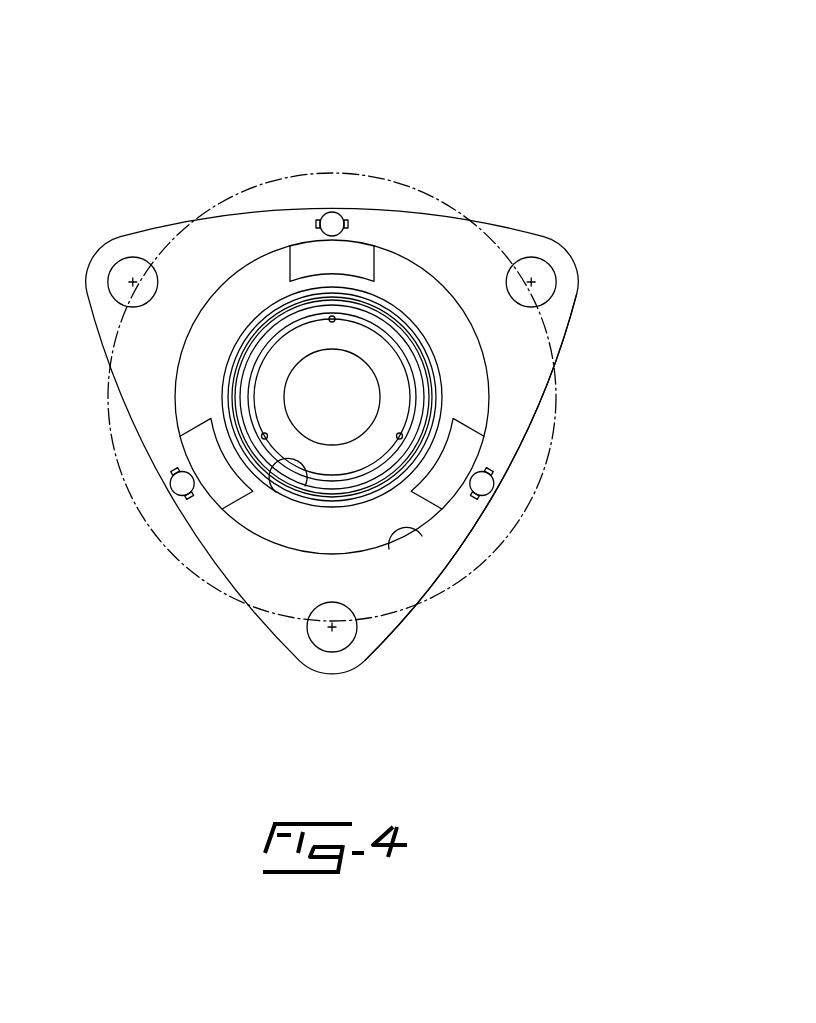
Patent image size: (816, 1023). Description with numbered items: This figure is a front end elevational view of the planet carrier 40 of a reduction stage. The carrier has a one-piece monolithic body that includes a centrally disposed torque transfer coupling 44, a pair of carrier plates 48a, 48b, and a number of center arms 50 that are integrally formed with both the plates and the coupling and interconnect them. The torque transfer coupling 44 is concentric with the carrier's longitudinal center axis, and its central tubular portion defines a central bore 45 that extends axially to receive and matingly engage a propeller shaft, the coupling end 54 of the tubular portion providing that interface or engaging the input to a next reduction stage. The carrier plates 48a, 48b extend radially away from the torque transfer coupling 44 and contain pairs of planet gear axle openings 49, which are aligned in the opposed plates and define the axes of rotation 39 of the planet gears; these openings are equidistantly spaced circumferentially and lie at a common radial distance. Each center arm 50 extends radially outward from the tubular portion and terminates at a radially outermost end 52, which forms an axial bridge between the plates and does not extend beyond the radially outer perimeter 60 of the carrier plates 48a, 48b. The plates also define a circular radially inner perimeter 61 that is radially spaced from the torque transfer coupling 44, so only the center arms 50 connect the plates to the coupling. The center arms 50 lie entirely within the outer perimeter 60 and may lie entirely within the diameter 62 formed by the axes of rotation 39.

The planet carrier 40 is at (460, 134).
The axes of rotation of the planet gears 39 is at (130, 280).
The torque transfer coupling 44 is at (455, 370).
The central bore 45 is at (349, 412).
The carrier plate 48a is at (367, 412).
The carrier plate 48b is at (480, 246).
The planet gear axle openings 49 is at (556, 290).
The center arms 50 is at (315, 255).
The radially outermost ends of the center arms 52 is at (333, 205).
The coupling end 54 is at (305, 490).
The radially outer perimeter 60 is at (533, 420).
The radially inner perimeter 61 is at (420, 532).
The diameter formed by the axes of rotation 62 is at (550, 463).